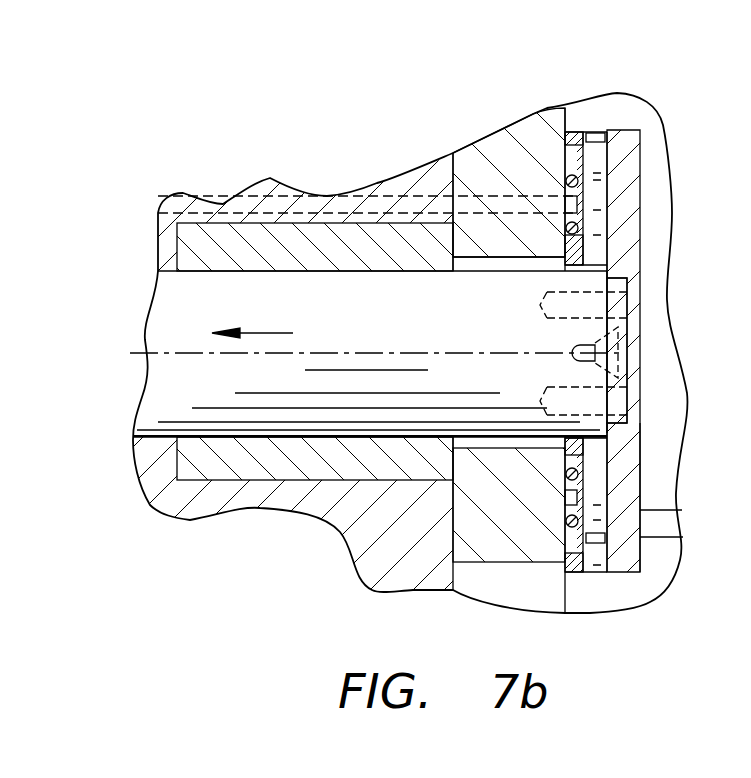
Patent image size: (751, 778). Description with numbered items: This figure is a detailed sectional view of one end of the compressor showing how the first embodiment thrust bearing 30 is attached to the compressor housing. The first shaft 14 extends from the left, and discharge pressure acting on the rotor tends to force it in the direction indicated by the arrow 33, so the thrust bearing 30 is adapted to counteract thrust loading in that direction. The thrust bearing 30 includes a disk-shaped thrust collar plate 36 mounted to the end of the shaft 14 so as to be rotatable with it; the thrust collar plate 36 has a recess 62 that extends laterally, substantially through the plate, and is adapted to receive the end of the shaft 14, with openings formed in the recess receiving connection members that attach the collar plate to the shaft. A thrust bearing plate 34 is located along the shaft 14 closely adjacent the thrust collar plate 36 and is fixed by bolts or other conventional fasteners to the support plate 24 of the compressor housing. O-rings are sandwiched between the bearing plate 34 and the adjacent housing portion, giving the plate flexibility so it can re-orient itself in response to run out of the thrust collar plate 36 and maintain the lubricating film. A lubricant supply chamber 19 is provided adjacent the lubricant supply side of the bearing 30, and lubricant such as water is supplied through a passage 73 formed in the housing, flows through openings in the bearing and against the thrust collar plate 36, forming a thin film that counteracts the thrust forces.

The first shaft 14 is at (168, 388).
The lubricant supply chamber 19 is at (490, 262).
The support plate 24 is at (497, 153).
The thrust bearing 30 is at (612, 190).
The arrow 33 is at (258, 330).
The thrust bearing plate 34 is at (592, 126).
The thrust collar plate 36 is at (623, 557).
The recess 62 is at (620, 283).
The passage 73 is at (390, 200).